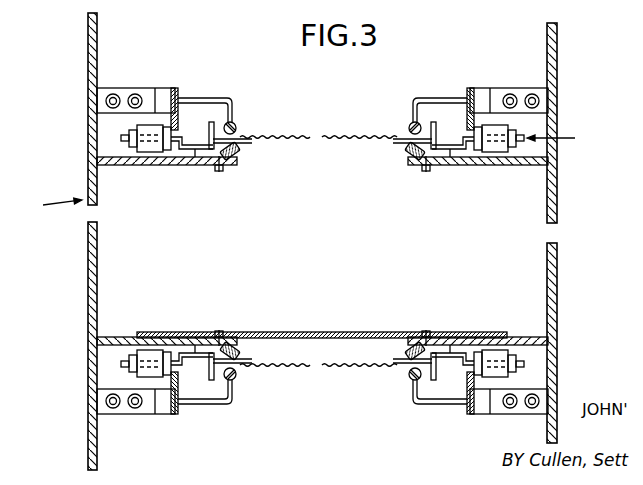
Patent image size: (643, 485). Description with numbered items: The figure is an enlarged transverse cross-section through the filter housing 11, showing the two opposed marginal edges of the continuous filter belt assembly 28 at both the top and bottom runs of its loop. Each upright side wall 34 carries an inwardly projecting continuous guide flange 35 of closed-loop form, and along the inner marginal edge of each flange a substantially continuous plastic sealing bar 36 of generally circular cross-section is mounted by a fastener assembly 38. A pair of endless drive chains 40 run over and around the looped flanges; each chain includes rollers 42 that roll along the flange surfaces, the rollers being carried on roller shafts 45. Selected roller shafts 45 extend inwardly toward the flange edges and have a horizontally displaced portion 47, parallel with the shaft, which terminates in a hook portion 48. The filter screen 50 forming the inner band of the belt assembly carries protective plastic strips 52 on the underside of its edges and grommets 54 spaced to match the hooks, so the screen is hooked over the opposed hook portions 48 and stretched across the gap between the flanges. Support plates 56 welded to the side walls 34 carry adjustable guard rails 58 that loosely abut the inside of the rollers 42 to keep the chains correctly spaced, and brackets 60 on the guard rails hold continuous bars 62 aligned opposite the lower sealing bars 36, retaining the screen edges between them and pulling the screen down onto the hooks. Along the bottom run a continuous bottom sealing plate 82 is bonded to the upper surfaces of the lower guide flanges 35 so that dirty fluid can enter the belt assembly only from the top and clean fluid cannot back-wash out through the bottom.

The filter housing 11 is at (48, 206).
The continuous filter belt assembly 28 is at (331, 118).
The side wall 34 is at (88, 90).
The guide flange 35 is at (150, 166).
The sealing bar 36 is at (240, 152).
The fastener assembly 38 is at (222, 171).
The drive chain 40 is at (564, 141).
The roller 42 is at (140, 130).
The roller shaft 45 is at (124, 141).
The horizontally displaced portion 47 is at (196, 152).
The hook portion 48 is at (211, 380).
The filter screen 50 is at (360, 120).
The protective plastic strip 52 is at (397, 144).
The grommet 54 is at (210, 136).
The support plate 56 is at (106, 88).
The guard rail 58 is at (177, 95).
The bracket 60 is at (234, 100).
The continuous bar 62 is at (236, 127).
The bottom sealing plate 82 is at (368, 305).